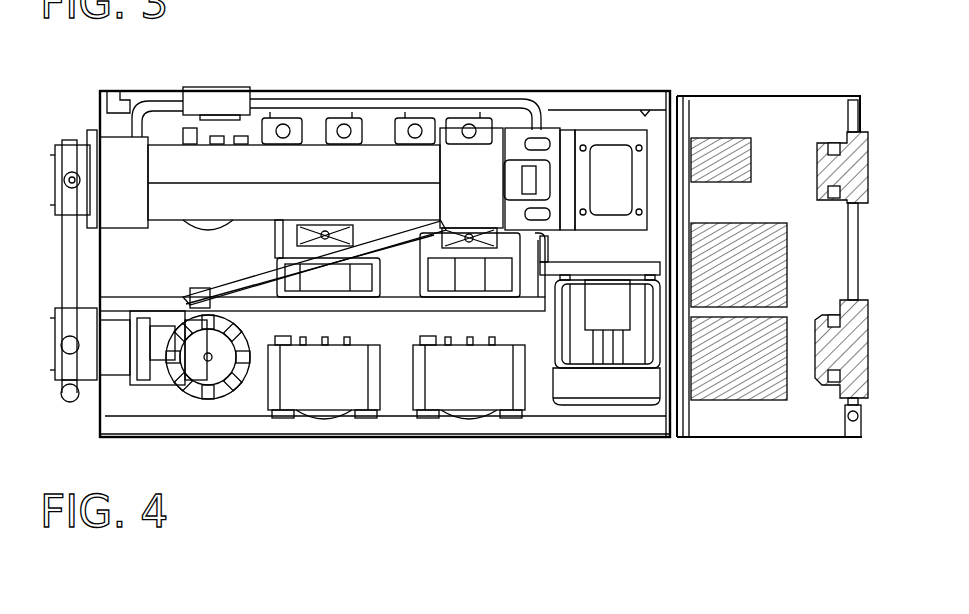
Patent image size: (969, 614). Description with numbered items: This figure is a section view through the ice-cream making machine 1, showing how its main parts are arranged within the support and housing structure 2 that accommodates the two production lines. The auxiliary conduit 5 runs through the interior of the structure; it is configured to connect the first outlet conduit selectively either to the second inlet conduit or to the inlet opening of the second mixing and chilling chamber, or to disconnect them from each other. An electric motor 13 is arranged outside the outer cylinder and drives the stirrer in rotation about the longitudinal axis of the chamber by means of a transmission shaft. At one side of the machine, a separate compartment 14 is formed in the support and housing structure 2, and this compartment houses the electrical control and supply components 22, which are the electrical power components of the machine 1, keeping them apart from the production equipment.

The ice-cream making machine 1 is at (645, 64).
The support and housing structure 2 is at (574, 104).
The auxiliary conduit 5 is at (300, 320).
The electric motor 13 is at (615, 370).
The separate compartment 14 is at (808, 112).
The electrical control and supply components 22 is at (722, 150).